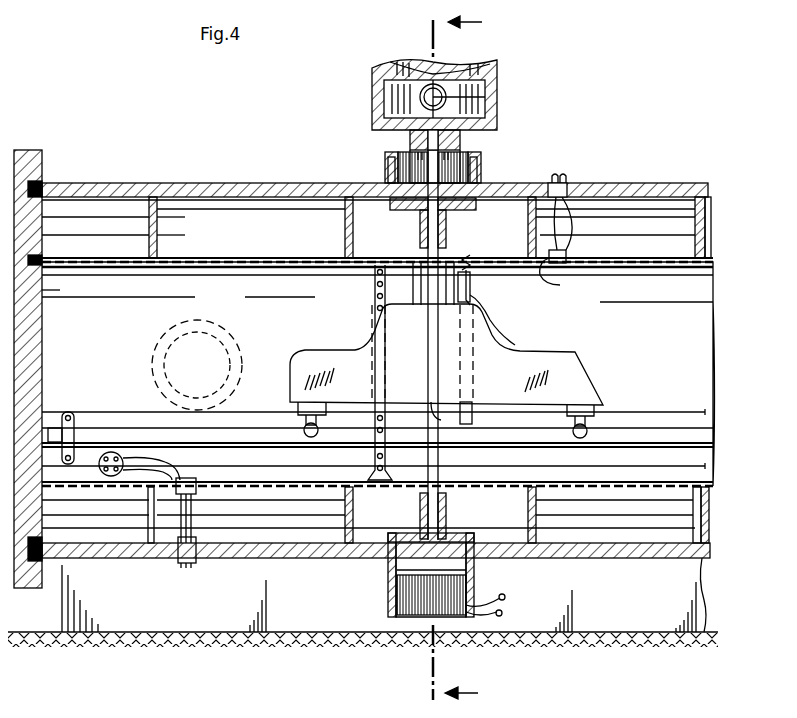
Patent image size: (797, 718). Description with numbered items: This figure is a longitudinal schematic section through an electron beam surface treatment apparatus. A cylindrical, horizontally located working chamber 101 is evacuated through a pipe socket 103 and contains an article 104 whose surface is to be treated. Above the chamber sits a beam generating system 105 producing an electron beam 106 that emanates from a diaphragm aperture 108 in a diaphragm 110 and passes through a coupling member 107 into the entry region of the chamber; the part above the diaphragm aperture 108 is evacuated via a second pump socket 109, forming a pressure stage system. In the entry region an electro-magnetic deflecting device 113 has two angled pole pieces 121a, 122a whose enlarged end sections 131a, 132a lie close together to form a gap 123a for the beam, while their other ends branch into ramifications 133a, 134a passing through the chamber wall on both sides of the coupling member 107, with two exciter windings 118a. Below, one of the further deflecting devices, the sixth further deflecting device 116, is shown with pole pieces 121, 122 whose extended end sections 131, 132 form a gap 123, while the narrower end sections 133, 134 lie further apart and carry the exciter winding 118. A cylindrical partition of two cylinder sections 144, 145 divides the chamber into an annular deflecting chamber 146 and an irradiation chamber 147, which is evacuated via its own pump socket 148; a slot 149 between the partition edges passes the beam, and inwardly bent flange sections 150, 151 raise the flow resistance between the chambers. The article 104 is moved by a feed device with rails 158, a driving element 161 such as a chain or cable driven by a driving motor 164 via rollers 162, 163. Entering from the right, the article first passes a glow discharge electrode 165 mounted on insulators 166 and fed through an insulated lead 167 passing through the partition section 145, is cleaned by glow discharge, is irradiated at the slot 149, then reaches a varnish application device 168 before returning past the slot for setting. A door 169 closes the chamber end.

The working chamber 101 is at (183, 183).
The pipe socket 103 is at (152, 356).
The article 104 is at (588, 362).
The beam generating system 105 is at (497, 70).
The electron beam 106 is at (428, 82).
The coupling member 107 is at (460, 142).
The diaphragm aperture 108 is at (430, 98).
The second pump socket 109 is at (498, 104).
The diaphragm 110 is at (410, 132).
The electro-magnetic deflecting device 113 is at (380, 213).
The sixth further deflecting device 116 is at (420, 521).
The exciter winding 118 is at (420, 617).
The exciter winding 118a is at (418, 148).
The pole piece 121 is at (388, 570).
The angled pole piece 121a is at (385, 160).
The pole piece 122 is at (474, 572).
The angled pole piece 122a is at (490, 162).
The gap 123 is at (446, 522).
The gap 123a is at (450, 230).
The extended end section 131 is at (420, 500).
The enlarged end section 131a is at (420, 235).
The extended end section 132 is at (446, 498).
The enlarged end section 132a is at (446, 235).
The narrower end section 133 is at (396, 608).
The ramification 133a is at (388, 170).
The narrower end section 134 is at (474, 604).
The ramification 134a is at (478, 178).
The cylinder section 144 is at (248, 256).
The cylinder section 145 is at (600, 258).
The annular deflecting chamber 146 is at (230, 229).
The irradiation chamber 147 is at (240, 309).
The pump socket 148 is at (225, 362).
The slot 149 is at (450, 402).
The flange section 150 is at (413, 265).
The flange section 151 is at (448, 265).
The rail 158 is at (128, 428).
The driving element 161 is at (250, 412).
The roller 162 is at (68, 412).
The roller 163 is at (70, 482).
The driving motor 164 is at (116, 478).
The glow discharge electrode 165 is at (500, 315).
The insulator 166 is at (470, 280).
The lead 167 is at (545, 283).
The varnish application device 168 is at (375, 298).
The door 169 is at (42, 292).